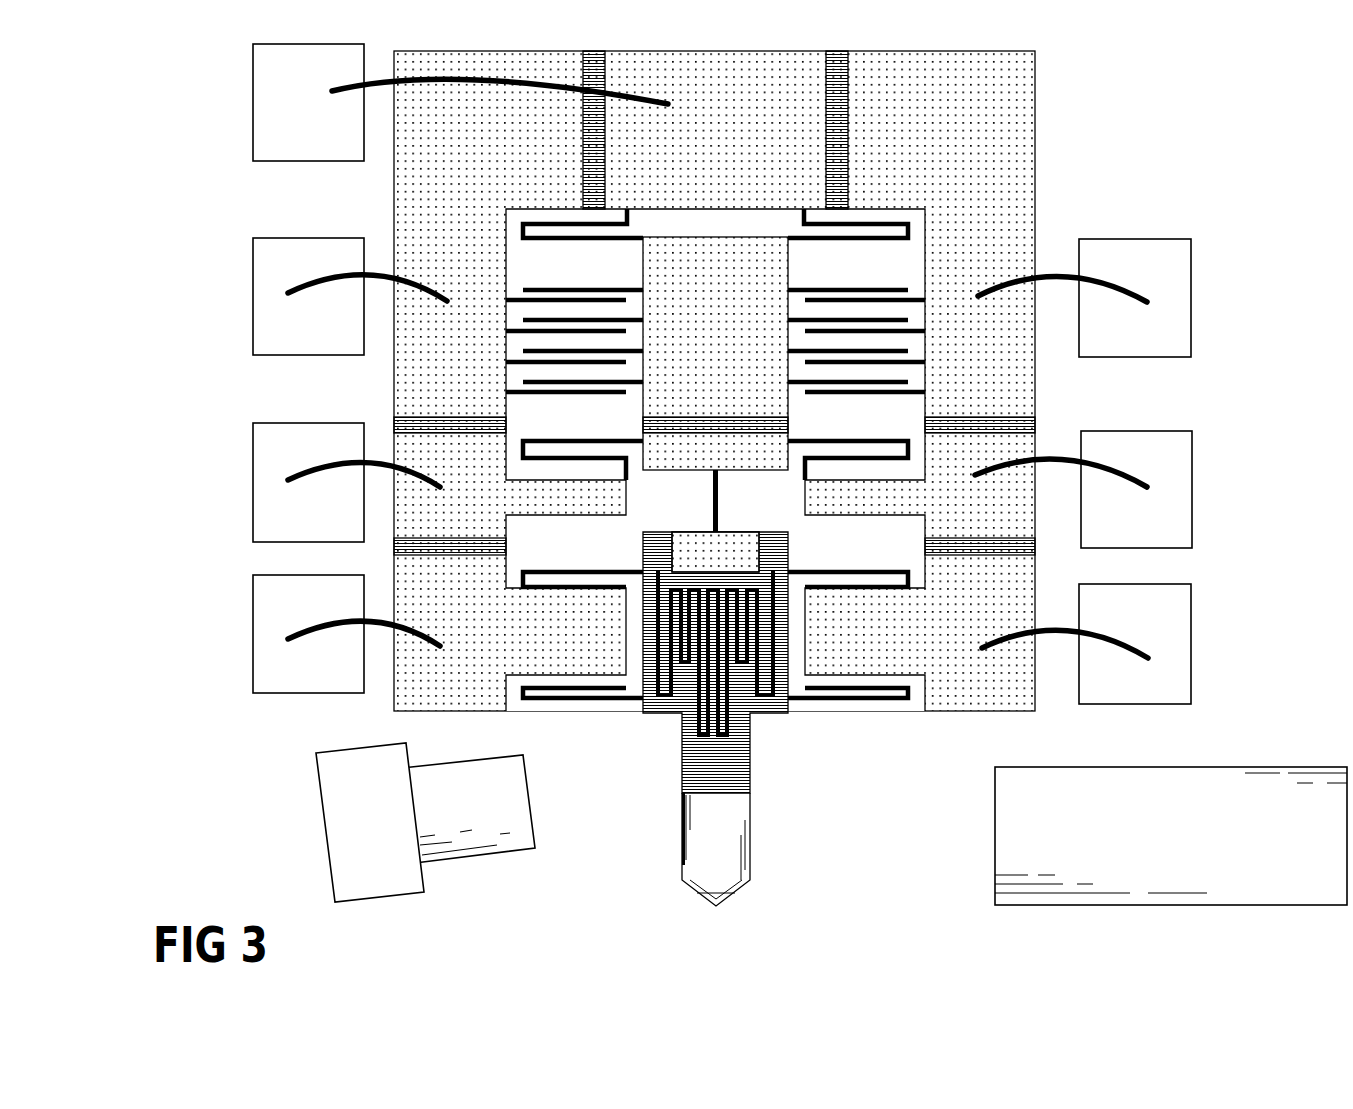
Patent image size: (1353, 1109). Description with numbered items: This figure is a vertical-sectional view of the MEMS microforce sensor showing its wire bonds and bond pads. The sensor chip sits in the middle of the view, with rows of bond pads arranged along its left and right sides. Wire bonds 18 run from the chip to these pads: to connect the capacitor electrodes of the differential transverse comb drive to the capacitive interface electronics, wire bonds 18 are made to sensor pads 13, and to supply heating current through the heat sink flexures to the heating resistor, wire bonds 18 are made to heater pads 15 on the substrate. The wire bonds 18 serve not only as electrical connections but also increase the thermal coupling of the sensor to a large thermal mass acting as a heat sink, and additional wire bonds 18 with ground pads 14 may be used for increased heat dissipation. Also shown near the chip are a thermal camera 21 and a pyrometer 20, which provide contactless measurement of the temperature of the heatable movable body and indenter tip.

The sensor pads 13 is at (287, 125).
The ground pads 14 is at (282, 500).
The heater pads 15 is at (278, 678).
The wire bonds 18 is at (347, 91).
The pyrometer 20 is at (1180, 765).
The thermal camera 21 is at (325, 827).